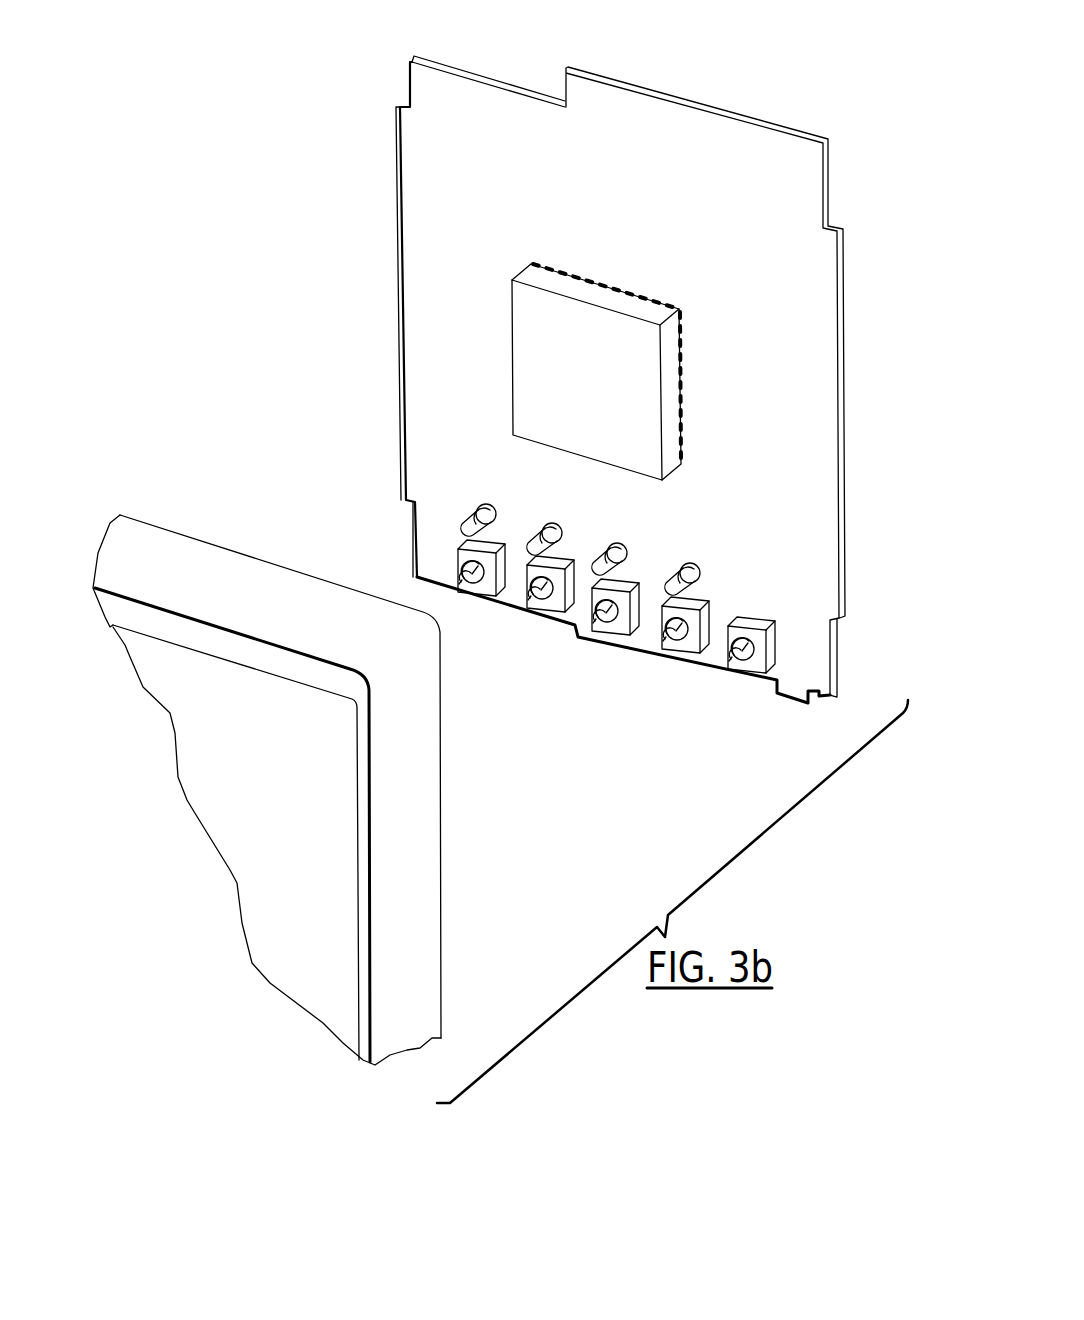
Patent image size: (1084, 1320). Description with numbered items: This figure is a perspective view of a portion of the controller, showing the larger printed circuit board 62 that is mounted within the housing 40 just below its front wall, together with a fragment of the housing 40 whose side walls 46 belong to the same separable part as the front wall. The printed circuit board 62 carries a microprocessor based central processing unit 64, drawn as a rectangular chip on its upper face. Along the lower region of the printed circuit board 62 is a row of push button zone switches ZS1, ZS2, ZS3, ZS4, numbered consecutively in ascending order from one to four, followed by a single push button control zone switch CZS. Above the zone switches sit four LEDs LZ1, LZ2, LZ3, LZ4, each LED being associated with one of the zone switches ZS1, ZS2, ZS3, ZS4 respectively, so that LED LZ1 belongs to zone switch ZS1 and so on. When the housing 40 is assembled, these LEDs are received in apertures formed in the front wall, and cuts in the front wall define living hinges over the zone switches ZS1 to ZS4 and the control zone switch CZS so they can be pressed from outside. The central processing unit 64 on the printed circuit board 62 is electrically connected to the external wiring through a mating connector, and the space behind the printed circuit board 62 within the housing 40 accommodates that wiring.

The housing 40 is at (262, 1000).
The side walls 46 is at (430, 905).
The printed circuit board 62 is at (822, 491).
The central processing unit 64 is at (588, 327).
The LED LZ1 is at (470, 508).
The LED LZ2 is at (541, 524).
The LED LZ3 is at (608, 542).
The LED LZ4 is at (682, 563).
The push button zone switch ZS1 is at (468, 587).
The push button zone switch ZS2 is at (538, 603).
The push button zone switch ZS3 is at (602, 623).
The push button zone switch ZS4 is at (673, 647).
The push button control zone switch CZS is at (743, 660).